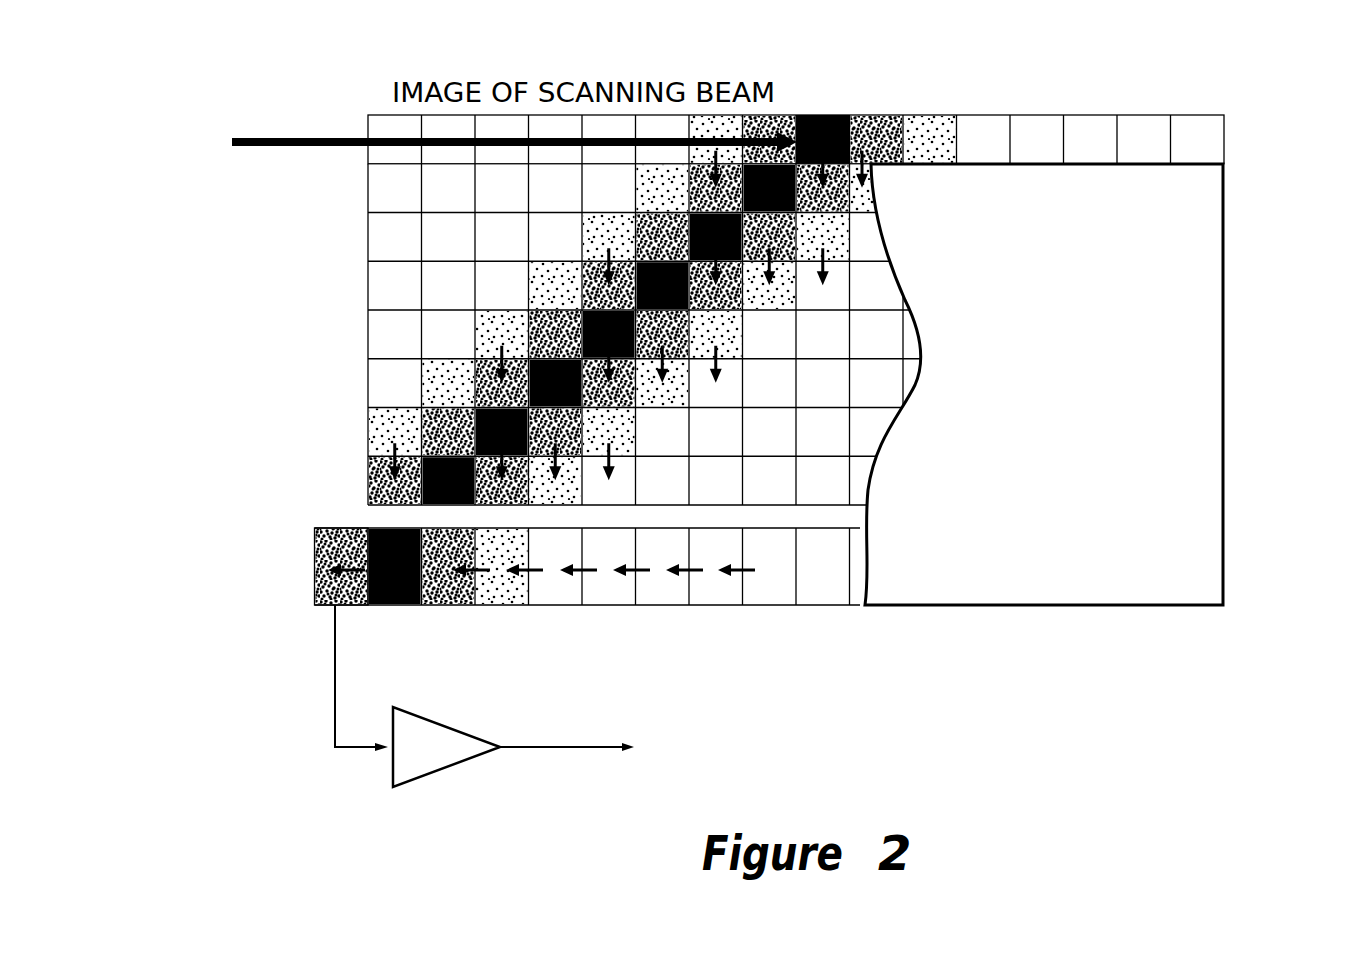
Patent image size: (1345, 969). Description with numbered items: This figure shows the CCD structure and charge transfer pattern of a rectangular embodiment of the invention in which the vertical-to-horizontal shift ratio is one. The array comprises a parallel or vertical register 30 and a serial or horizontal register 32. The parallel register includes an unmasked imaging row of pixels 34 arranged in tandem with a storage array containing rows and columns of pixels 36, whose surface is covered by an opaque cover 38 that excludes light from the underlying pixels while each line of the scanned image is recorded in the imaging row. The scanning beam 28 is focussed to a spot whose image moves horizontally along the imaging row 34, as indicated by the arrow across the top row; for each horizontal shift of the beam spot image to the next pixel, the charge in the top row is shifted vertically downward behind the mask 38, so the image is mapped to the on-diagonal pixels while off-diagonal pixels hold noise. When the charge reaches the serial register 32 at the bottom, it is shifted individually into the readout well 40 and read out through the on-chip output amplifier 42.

The scanning beam 28 is at (278, 130).
The parallel register 30 is at (831, 95).
The serial register 32 is at (296, 573).
The imaging row of pixels 34 is at (1246, 138).
The storage array 36 is at (346, 290).
The opaque cover 38 is at (1200, 291).
The readout well 40 is at (308, 611).
The on-chip output amplifier 42 is at (427, 733).